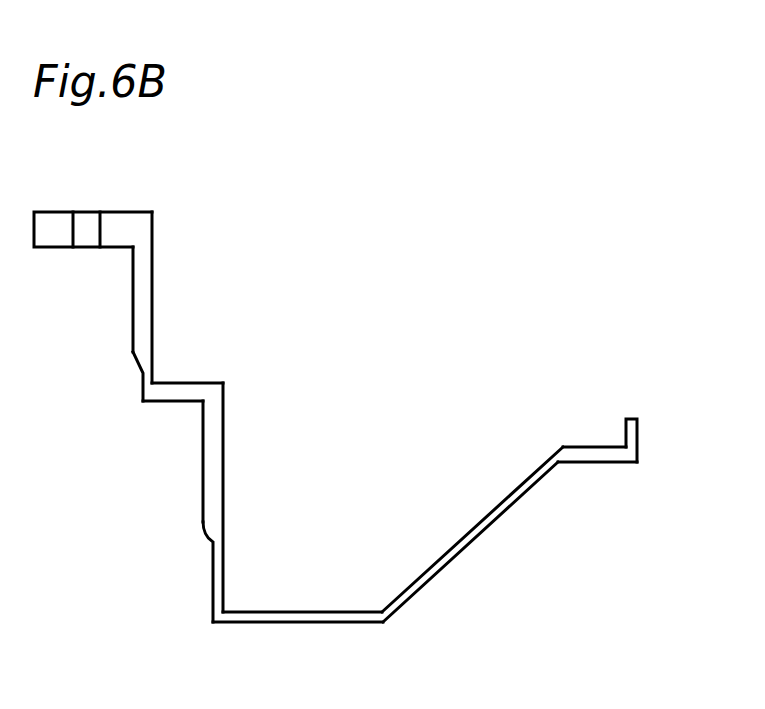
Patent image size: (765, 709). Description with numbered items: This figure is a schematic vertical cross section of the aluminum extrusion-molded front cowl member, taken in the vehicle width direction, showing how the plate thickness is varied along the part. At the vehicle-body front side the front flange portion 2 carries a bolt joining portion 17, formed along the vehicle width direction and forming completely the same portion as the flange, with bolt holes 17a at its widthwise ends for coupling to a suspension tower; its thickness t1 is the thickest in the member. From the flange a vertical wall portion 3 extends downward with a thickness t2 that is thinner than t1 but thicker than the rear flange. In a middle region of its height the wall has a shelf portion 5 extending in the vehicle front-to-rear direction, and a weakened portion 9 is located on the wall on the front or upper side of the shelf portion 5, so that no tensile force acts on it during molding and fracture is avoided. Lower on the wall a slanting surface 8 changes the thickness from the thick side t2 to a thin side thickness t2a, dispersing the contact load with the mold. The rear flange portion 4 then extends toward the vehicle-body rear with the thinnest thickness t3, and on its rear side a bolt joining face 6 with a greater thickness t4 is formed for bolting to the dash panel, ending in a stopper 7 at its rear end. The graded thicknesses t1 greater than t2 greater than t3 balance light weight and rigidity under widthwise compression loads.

The front flange portion 2 is at (98, 191).
The bolt joining portion 17 is at (115, 211).
The bolt holes 17a is at (100, 228).
The vertical wall portion 3 is at (152, 323).
The weakened portion 9 is at (143, 373).
The shelf portion 5 is at (182, 383).
The slanting surface 8 is at (205, 537).
The rear flange portion 4 is at (413, 568).
The bolt joining face 6 is at (616, 445).
The stopper 7 is at (637, 438).
The thickness of bolt joining portion t1 is at (58, 273).
The thickness of vertical wall portion t2 is at (108, 296).
The thin side thickness t2a is at (180, 571).
The thickness of rear flange portion t3 is at (338, 643).
The thickness of bolt joining face t4 is at (588, 483).